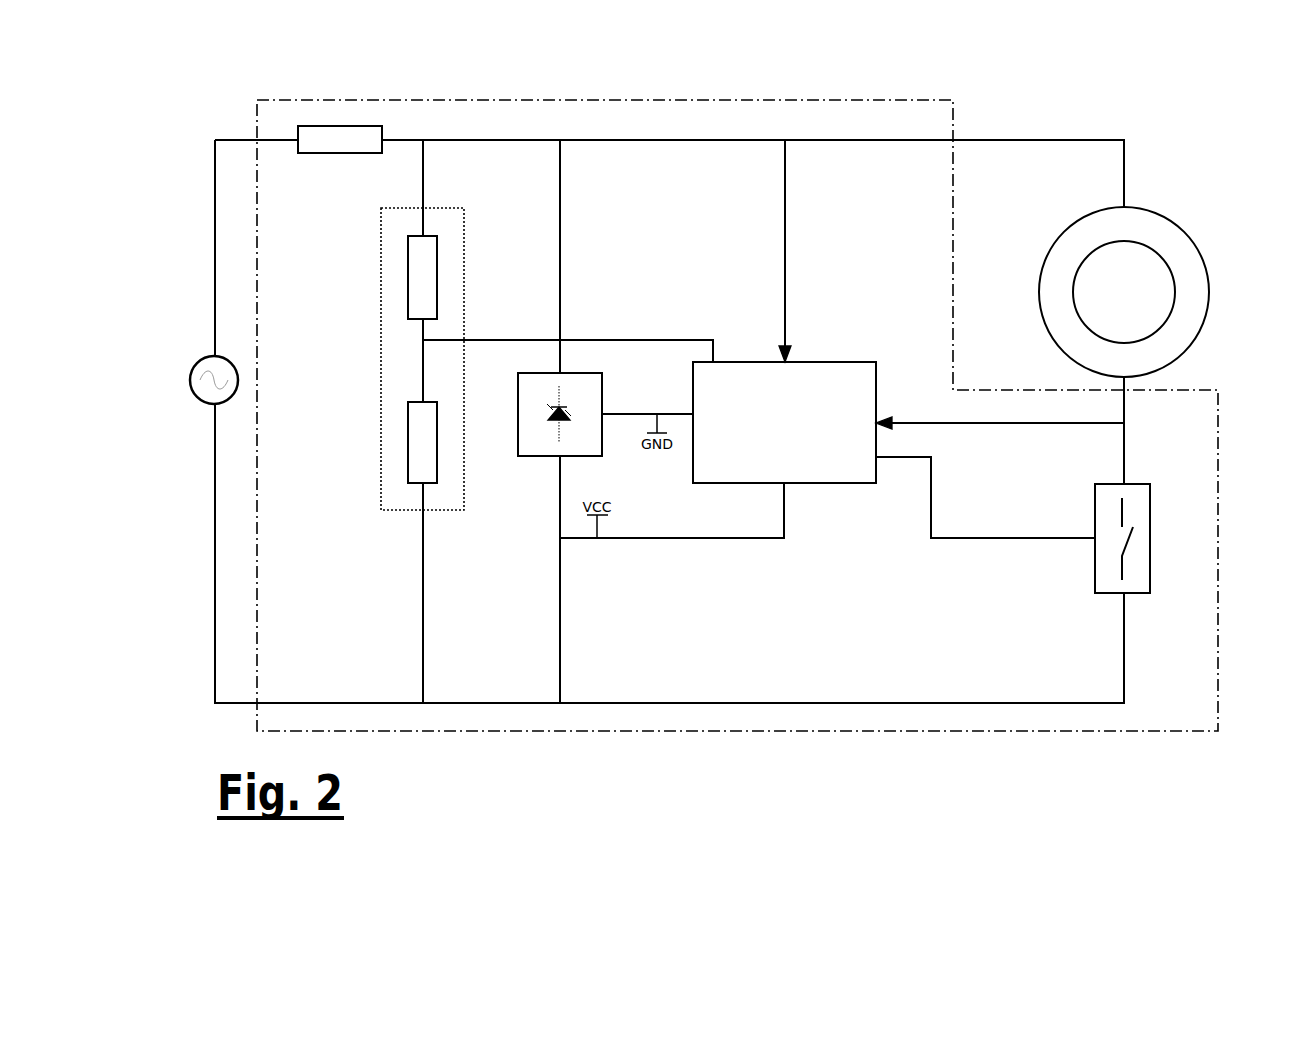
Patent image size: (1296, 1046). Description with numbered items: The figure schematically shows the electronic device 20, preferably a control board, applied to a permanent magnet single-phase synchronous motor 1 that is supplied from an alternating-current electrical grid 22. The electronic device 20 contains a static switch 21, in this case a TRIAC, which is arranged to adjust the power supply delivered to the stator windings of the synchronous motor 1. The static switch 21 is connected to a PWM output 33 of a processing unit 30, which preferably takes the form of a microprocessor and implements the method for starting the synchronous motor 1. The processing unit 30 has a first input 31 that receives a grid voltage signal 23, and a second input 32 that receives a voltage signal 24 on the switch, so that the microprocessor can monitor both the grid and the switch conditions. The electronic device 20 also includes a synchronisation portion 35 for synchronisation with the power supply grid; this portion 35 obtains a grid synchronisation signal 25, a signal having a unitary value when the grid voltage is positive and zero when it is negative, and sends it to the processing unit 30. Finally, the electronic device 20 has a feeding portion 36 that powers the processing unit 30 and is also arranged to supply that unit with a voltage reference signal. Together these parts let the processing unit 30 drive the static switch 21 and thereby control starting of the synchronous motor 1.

The synchronous motor 1 is at (1158, 243).
The electronic device 20 is at (1080, 731).
The static switch 21 is at (1140, 510).
The electrical grid 22 is at (203, 363).
The grid voltage signal 23 is at (786, 278).
The voltage signal on the switch 24 is at (968, 423).
The grid synchronisation signal 25 is at (535, 343).
The processing unit 30 is at (817, 447).
The first input 31 is at (777, 363).
The second input 32 is at (877, 370).
The PWM output 33 is at (877, 483).
The synchronisation portion 35 is at (387, 483).
The feeding portion 36 is at (543, 443).